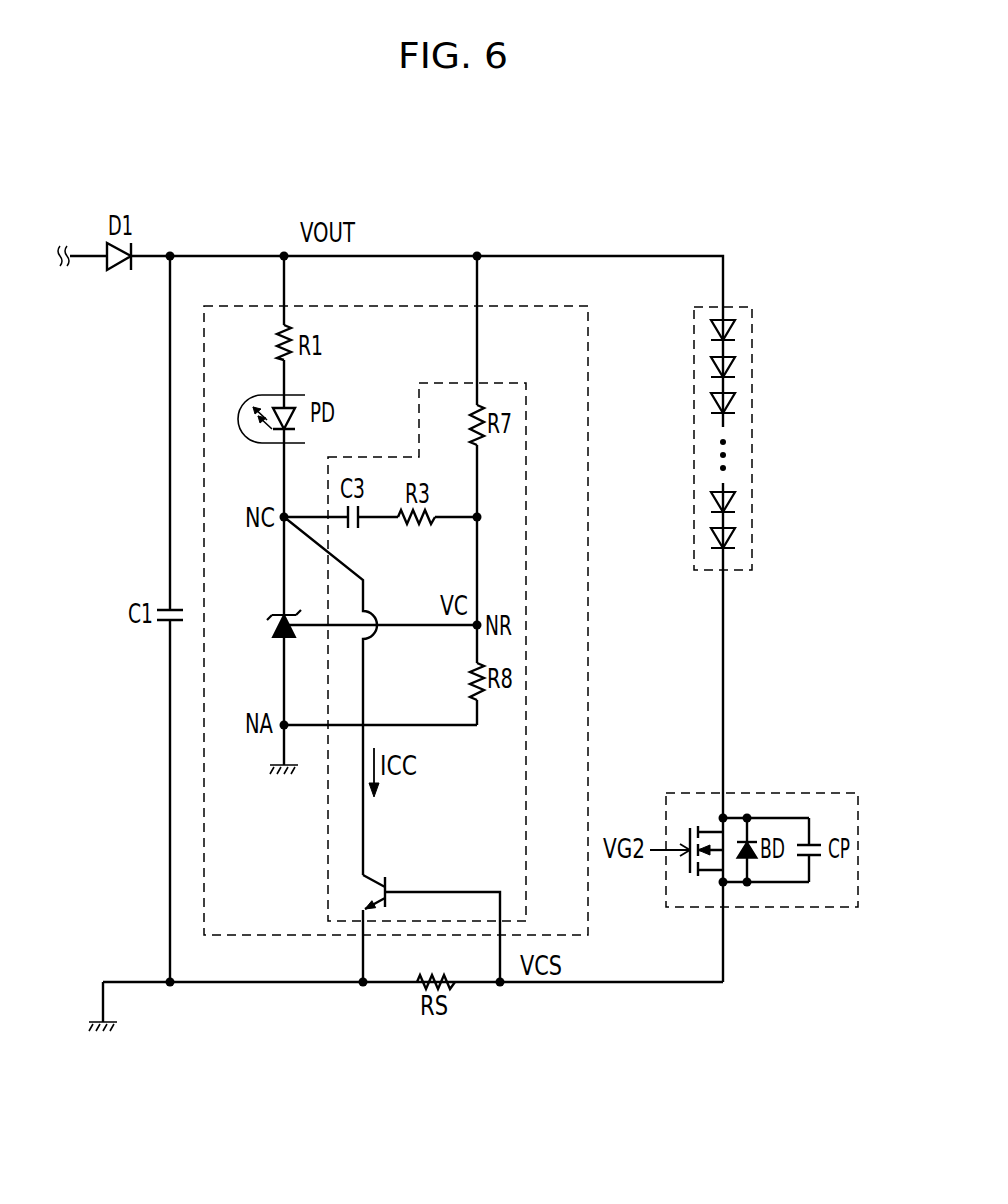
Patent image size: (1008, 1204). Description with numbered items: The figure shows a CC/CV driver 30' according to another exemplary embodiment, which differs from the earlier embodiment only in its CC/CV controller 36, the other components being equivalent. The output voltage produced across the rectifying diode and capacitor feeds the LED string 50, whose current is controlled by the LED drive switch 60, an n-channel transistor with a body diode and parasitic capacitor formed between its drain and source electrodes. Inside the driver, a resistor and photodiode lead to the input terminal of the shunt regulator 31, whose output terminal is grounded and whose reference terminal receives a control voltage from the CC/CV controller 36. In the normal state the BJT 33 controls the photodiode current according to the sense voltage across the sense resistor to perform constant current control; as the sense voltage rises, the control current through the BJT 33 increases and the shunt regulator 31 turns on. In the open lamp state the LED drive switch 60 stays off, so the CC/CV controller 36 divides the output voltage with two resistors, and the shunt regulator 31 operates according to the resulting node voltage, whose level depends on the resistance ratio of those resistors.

The CC/CV driver 30' is at (427, 620).
The shunt regulator 31 is at (270, 626).
The BJT 33 is at (373, 877).
The CC/CV controller 36 is at (526, 477).
The LED string 50 is at (752, 425).
The LED drive switch 60 is at (810, 793).